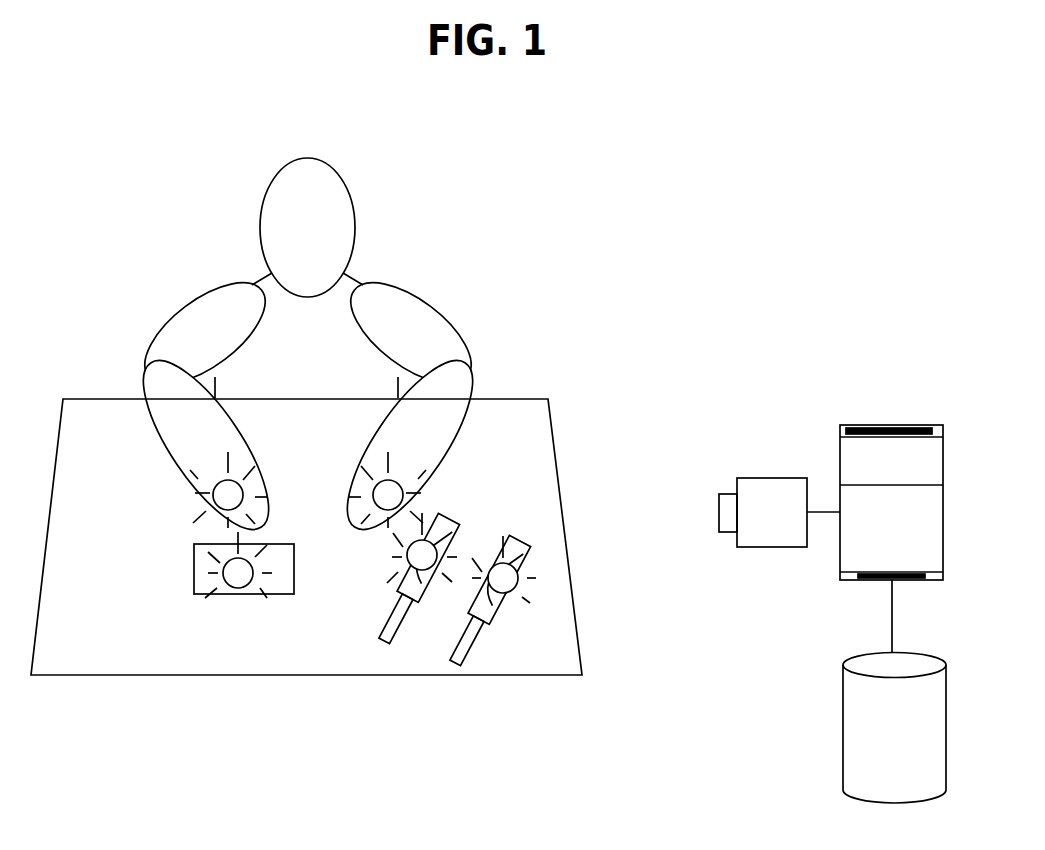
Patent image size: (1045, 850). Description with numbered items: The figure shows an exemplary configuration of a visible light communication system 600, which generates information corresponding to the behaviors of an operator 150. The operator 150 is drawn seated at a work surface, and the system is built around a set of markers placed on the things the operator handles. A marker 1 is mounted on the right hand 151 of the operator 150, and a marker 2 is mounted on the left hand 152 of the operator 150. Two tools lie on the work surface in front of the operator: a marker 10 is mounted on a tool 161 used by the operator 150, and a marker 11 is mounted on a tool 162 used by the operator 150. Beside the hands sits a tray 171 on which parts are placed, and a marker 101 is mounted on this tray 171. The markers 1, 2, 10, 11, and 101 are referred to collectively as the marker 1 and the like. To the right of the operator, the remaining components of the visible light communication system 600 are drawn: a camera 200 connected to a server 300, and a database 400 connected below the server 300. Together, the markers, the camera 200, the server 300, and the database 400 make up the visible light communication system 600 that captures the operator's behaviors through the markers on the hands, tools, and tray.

The visible light communication system 600 is at (625, 263).
The operator 150 is at (277, 172).
The right hand 151 is at (190, 450).
The left hand 152 is at (436, 420).
The marker 1 is at (202, 482).
The marker 2 is at (408, 492).
The marker 10 is at (402, 605).
The marker 11 is at (465, 622).
The tool 161 is at (443, 520).
The tool 162 is at (523, 540).
The tray 171 is at (217, 592).
The marker 101 is at (238, 577).
The camera 200 is at (771, 478).
The server 300 is at (890, 424).
The database 400 is at (856, 708).